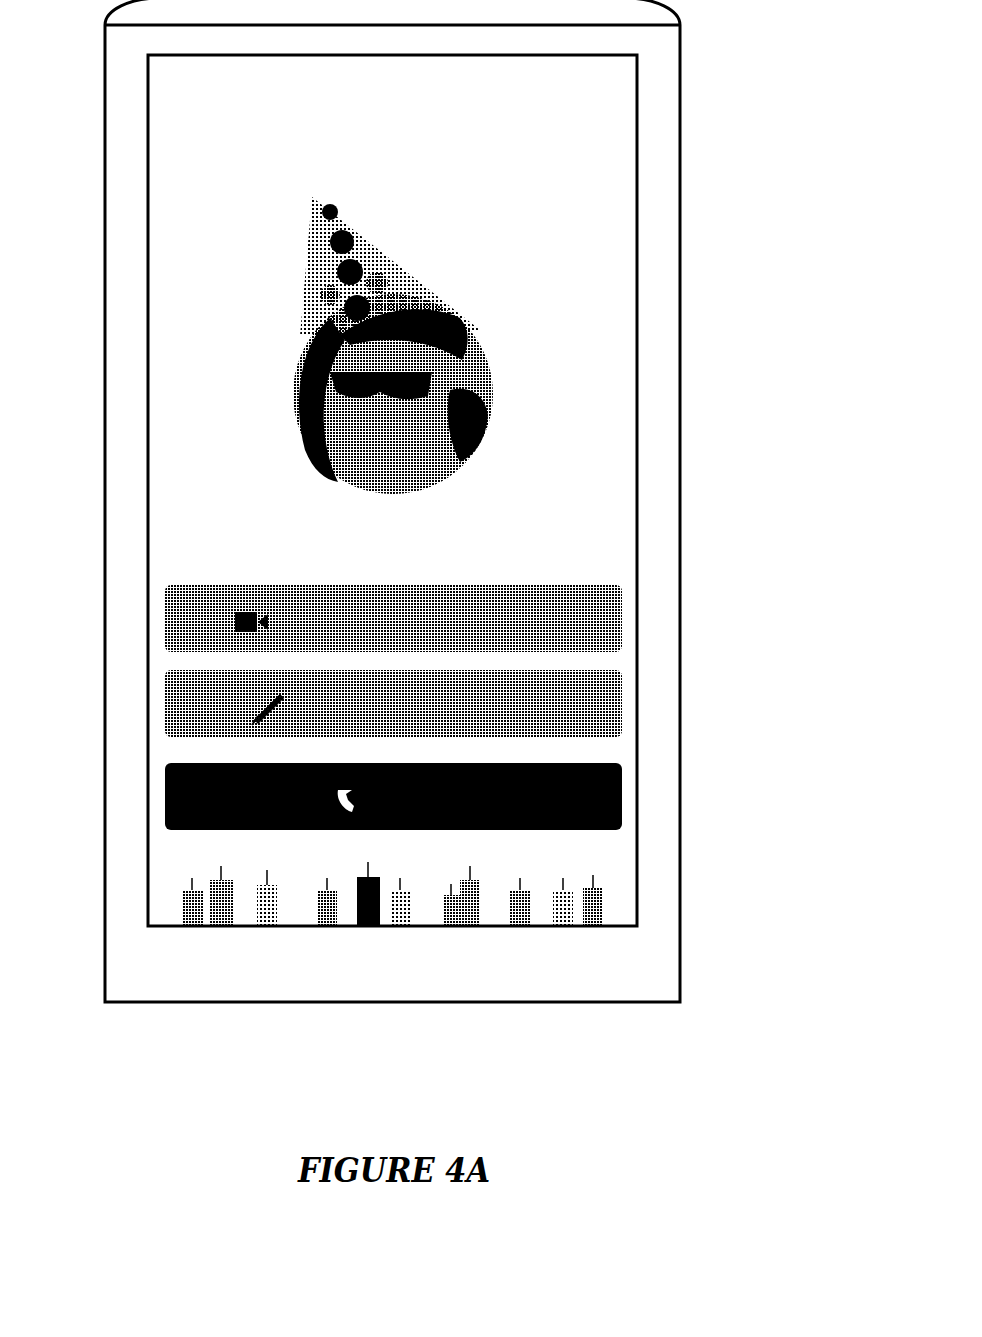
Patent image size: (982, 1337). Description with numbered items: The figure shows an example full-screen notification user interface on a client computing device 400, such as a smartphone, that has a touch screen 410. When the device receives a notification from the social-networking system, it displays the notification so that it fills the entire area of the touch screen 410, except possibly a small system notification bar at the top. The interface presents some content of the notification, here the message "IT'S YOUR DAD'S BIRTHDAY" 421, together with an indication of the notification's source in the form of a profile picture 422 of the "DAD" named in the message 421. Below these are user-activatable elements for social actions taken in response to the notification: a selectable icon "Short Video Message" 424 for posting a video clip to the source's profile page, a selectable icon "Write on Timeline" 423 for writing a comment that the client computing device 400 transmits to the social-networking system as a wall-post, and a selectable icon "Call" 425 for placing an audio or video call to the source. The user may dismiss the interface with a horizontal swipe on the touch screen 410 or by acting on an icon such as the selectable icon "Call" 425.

The client computing device 400 is at (105, 45).
The touch screen 410 is at (148, 240).
The message 421 is at (612, 118).
The profile picture 422 is at (524, 416).
The selectable icon "Write on Timeline" 423 is at (632, 706).
The selectable icon "Short Video Message" 424 is at (634, 622).
The selectable icon "Call" 425 is at (634, 798).